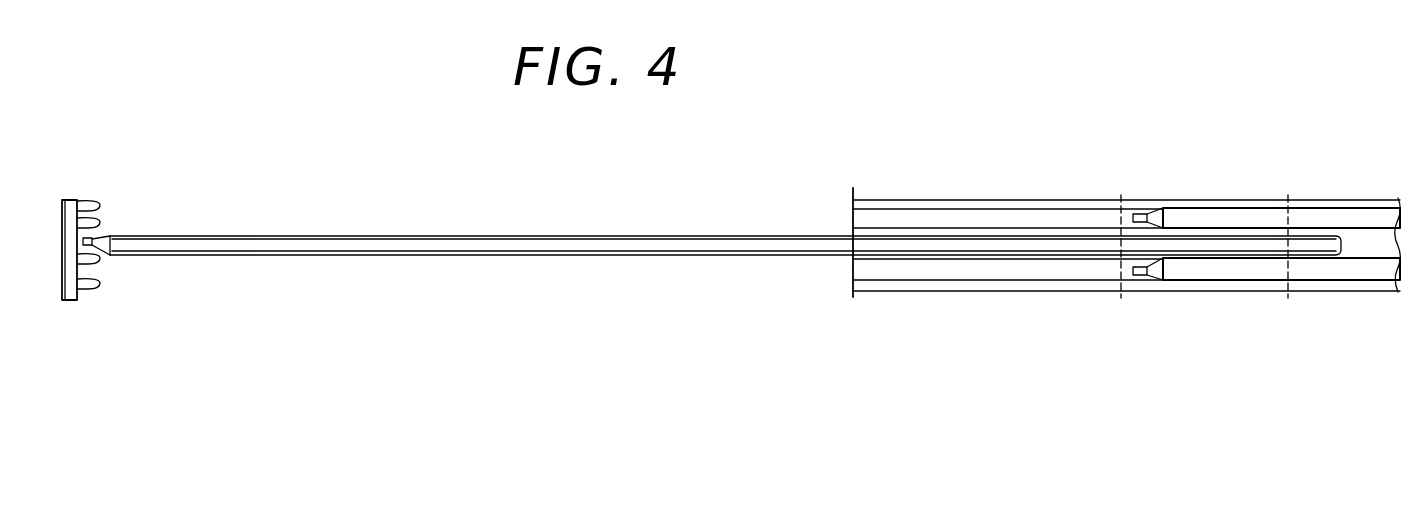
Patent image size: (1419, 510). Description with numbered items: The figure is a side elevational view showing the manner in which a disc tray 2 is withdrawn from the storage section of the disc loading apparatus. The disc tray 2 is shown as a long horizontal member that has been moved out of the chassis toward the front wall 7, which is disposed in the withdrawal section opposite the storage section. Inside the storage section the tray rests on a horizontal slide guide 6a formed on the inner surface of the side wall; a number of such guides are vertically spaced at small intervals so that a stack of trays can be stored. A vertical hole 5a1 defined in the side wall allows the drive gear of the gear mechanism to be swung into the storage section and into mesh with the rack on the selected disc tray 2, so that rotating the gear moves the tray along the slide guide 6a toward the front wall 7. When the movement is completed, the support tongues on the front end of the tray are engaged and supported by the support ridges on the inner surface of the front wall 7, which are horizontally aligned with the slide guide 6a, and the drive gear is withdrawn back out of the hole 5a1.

The front wall 7 is at (63, 288).
The disc tray 2 is at (568, 245).
The slide guide 6a is at (970, 227).
The vertical hole 5a1 is at (1122, 220).